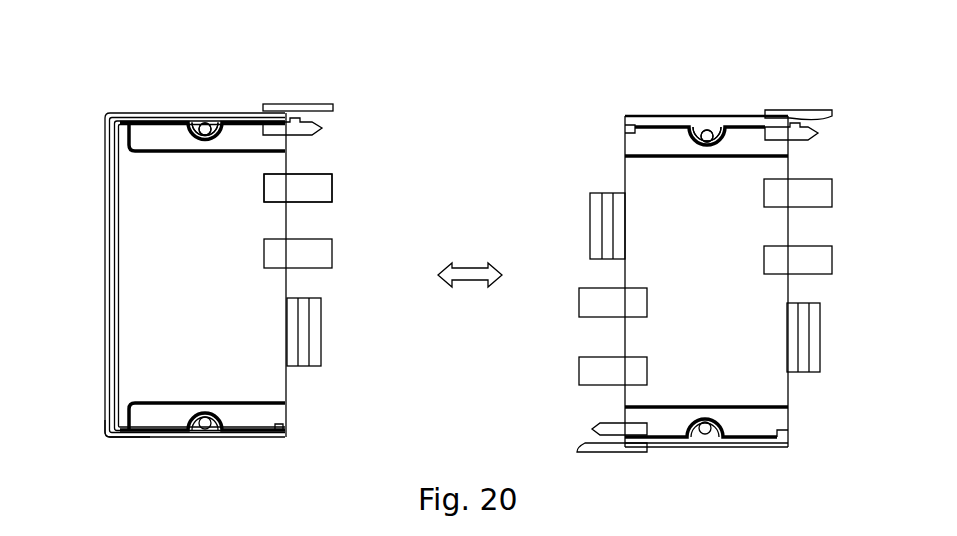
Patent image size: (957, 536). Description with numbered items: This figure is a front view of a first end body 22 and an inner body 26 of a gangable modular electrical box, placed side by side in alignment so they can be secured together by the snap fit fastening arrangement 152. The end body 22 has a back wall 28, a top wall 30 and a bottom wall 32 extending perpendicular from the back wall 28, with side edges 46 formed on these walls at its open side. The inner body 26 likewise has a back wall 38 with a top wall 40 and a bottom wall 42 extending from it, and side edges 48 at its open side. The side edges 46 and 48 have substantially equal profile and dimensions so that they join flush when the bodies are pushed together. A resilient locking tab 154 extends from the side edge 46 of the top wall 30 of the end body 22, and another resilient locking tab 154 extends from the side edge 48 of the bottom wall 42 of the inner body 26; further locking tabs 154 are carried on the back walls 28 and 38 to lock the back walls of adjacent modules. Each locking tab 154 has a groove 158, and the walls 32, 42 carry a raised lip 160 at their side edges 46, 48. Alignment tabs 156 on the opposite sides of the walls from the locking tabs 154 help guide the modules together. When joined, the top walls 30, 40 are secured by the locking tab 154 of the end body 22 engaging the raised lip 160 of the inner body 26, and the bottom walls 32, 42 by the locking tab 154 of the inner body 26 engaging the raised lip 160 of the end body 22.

The snap fit fastening arrangement 152 is at (382, 92).
The first end body 22 is at (205, 112).
The inner body 26 is at (708, 117).
The back wall 28 is at (216, 287).
The back wall 38 is at (717, 294).
The top wall 30 is at (139, 101).
The bottom wall 32 is at (143, 441).
The top wall 40 is at (742, 117).
The bottom wall 42 is at (748, 444).
The side edges 46 is at (288, 157).
The side edges 48 is at (625, 174).
The resilient locking tab 154 is at (326, 128).
The alignment tabs 156 is at (333, 186).
The groove 158 is at (294, 118).
The raised lip 160 is at (283, 430).